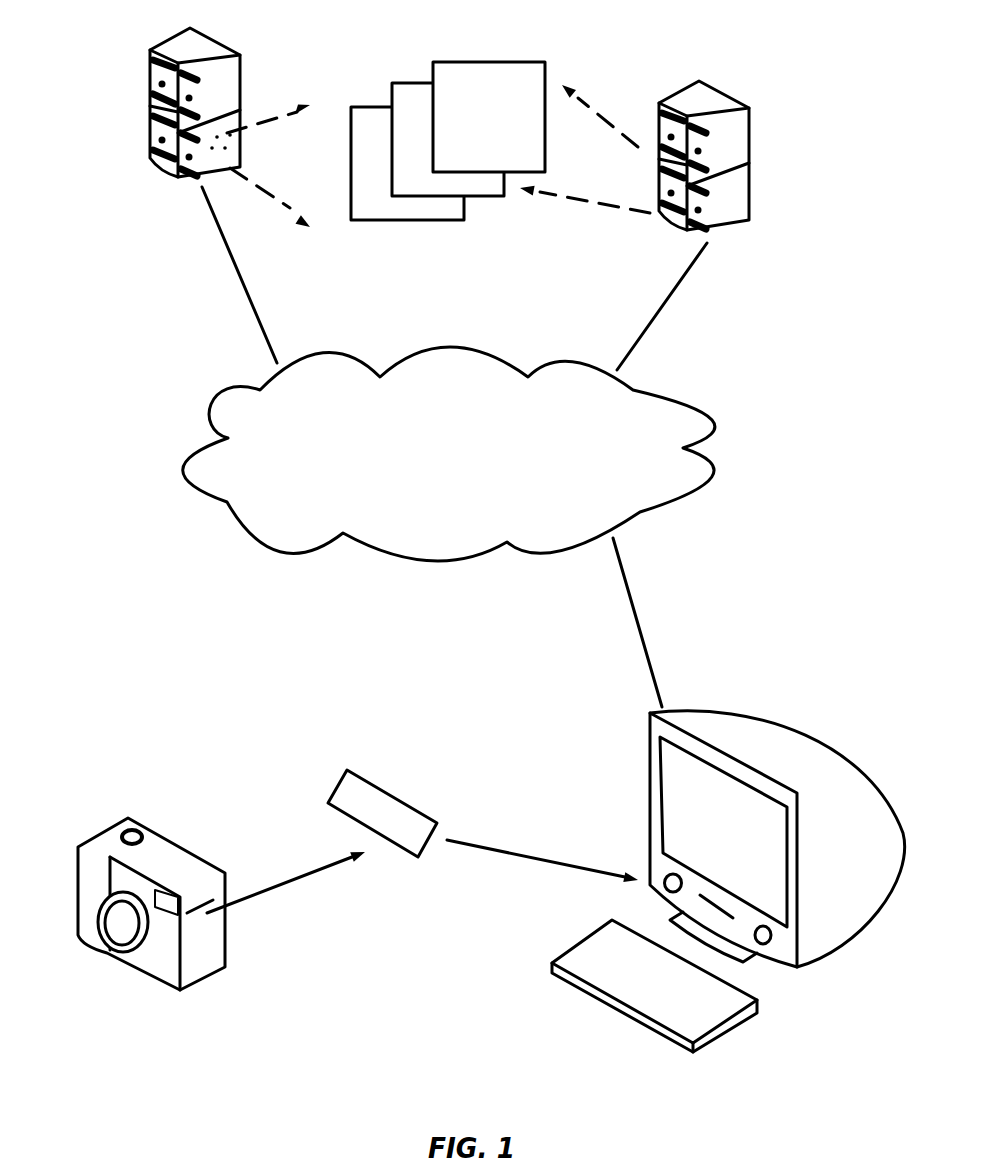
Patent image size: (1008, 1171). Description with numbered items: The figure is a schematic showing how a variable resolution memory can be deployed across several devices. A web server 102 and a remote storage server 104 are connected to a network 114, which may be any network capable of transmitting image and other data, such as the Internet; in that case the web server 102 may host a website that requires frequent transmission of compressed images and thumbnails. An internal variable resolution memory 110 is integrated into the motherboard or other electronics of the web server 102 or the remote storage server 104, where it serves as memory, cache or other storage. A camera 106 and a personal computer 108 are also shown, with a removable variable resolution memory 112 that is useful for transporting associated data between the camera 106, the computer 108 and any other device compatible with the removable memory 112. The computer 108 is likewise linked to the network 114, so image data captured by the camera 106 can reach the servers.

The web server 102 is at (152, 92).
The remote storage server 104 is at (683, 92).
The camera 106 is at (127, 818).
The personal computer (PC) 108 is at (647, 735).
The internal variable resolution memory (VRM) 110 is at (433, 62).
The removable variable resolution memory (VRM) 112 is at (337, 785).
The network 114 is at (207, 463).